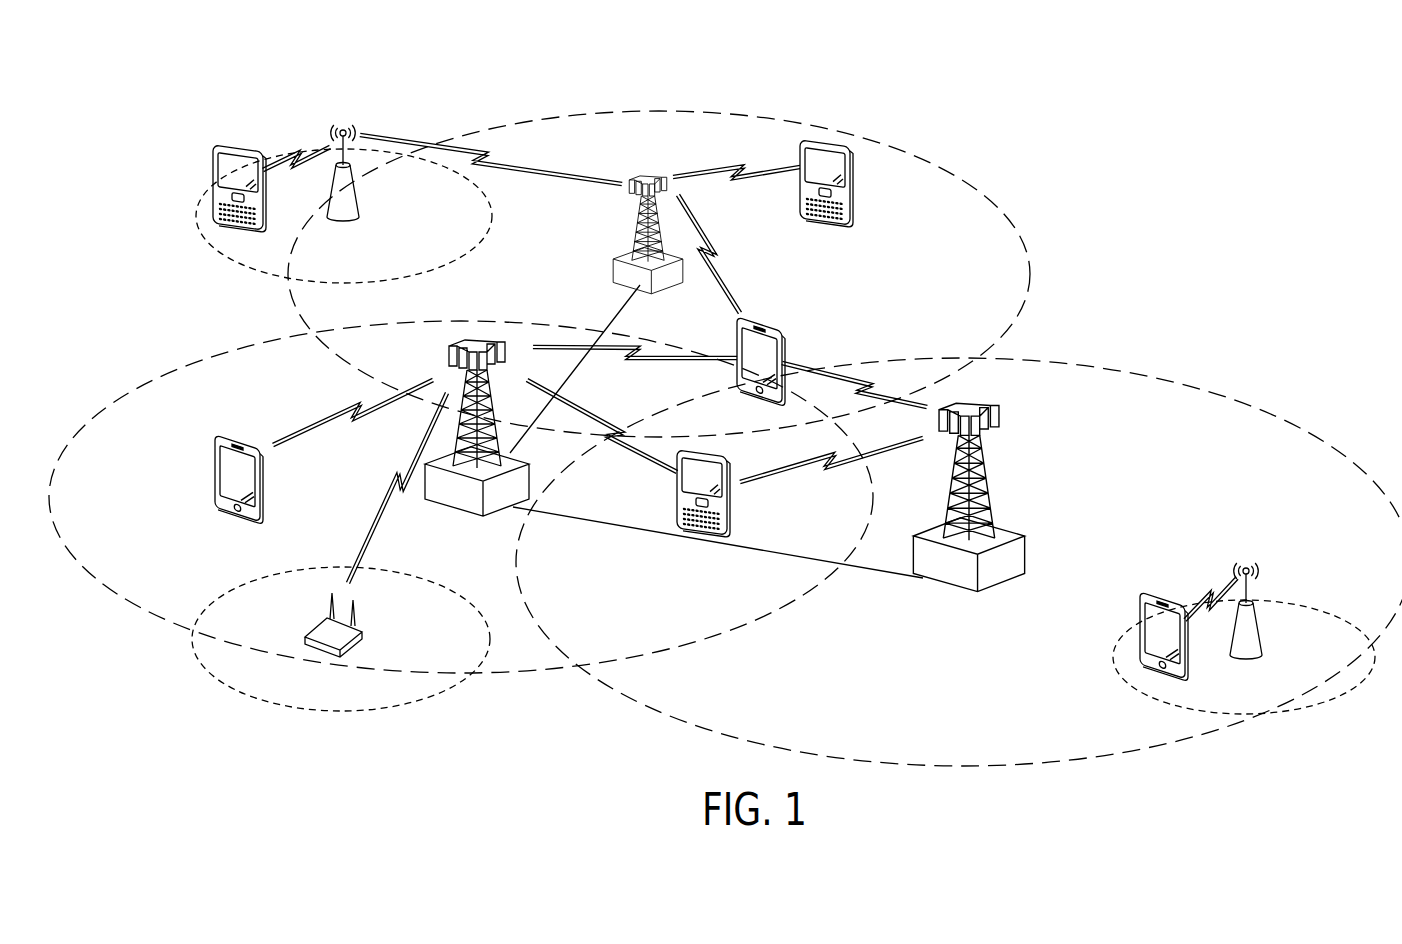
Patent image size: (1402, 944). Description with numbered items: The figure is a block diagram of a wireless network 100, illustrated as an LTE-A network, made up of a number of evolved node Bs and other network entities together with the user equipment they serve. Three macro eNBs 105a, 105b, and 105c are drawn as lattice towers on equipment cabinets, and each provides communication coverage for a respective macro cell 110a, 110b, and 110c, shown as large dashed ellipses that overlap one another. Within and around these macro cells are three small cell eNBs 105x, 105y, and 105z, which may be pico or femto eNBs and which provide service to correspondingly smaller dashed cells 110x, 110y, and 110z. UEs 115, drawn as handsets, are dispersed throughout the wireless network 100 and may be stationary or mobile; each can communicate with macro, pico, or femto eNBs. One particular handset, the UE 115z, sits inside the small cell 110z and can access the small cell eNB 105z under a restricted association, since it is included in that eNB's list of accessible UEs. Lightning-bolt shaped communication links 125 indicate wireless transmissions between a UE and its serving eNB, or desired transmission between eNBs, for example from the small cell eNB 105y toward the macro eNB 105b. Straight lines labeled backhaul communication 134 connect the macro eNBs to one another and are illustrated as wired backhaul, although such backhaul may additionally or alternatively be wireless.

The wireless network 100 is at (1127, 169).
The macro eNB 105a is at (460, 515).
The macro eNB 105b is at (613, 263).
The macro eNB 105c is at (1005, 583).
The small cell eNB 105x is at (362, 641).
The small cell eNB 105y is at (358, 215).
The small cell eNB 105z is at (1262, 648).
The macro cell 110a is at (170, 373).
The macro cell 110b is at (843, 130).
The macro cell 110c is at (1183, 382).
The small cell 110x is at (262, 703).
The small cell 110y is at (243, 267).
The small cell 110z is at (1343, 697).
The UE 115 is at (213, 158).
The UE 115z is at (1140, 607).
The communication link 125 is at (295, 153).
The backhaul communication 134 is at (617, 313).